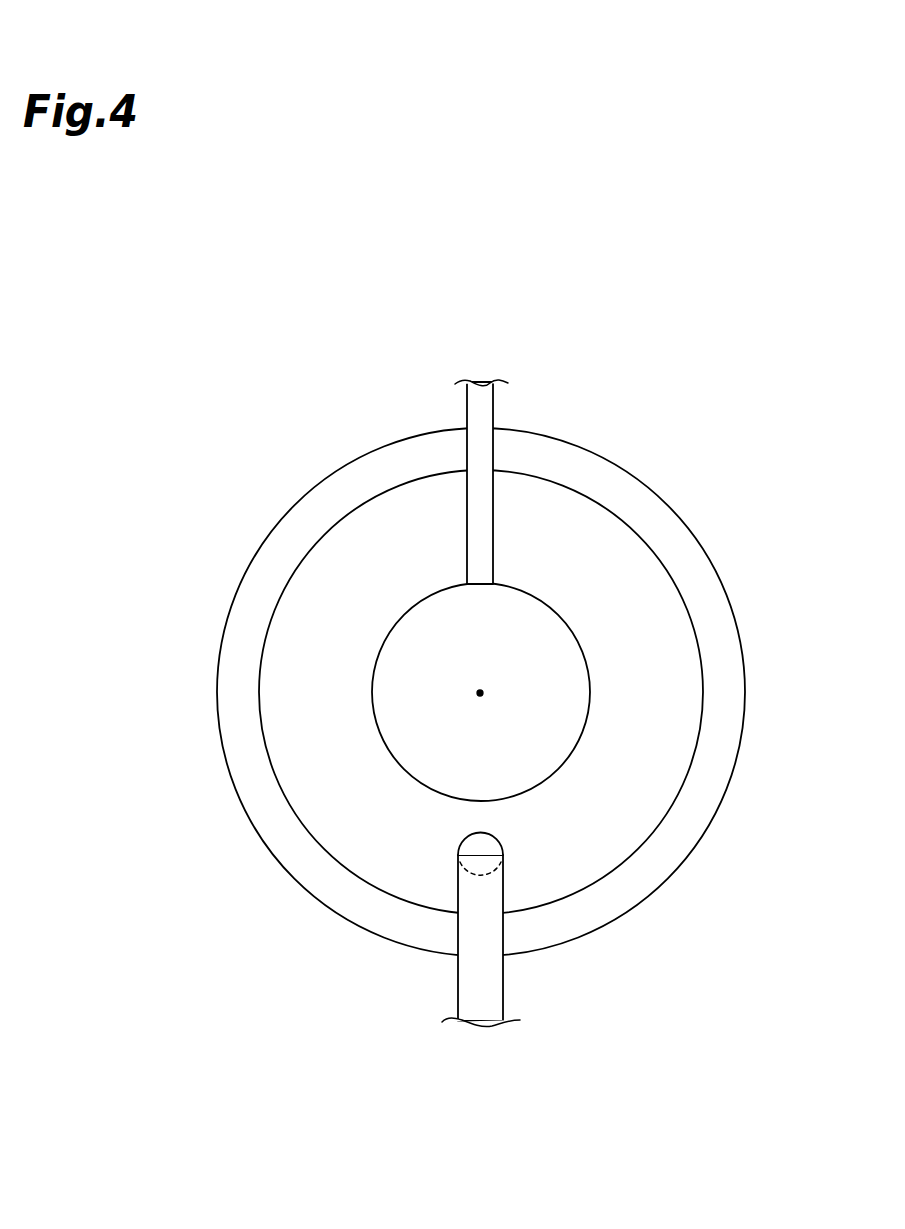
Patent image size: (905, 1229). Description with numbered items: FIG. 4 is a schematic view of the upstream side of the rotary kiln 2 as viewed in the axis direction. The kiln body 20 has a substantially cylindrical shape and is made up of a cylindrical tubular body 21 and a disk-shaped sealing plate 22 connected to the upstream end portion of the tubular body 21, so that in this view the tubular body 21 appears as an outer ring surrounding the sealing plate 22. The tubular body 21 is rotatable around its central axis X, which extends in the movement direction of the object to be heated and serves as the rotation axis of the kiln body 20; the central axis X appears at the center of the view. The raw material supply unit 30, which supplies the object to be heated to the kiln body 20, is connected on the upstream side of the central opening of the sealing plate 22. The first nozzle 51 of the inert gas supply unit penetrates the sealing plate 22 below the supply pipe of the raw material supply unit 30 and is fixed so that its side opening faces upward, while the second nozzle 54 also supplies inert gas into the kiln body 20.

The rotating device 2 is at (217, 390).
The kiln body 20 is at (522, 692).
The tubular body 21 is at (734, 600).
The sealing plate 22 is at (612, 563).
The raw material supply unit 30 is at (372, 692).
The first nozzle 51 is at (457, 890).
The second nozzle 54 is at (495, 515).
The central axis X is at (484, 692).